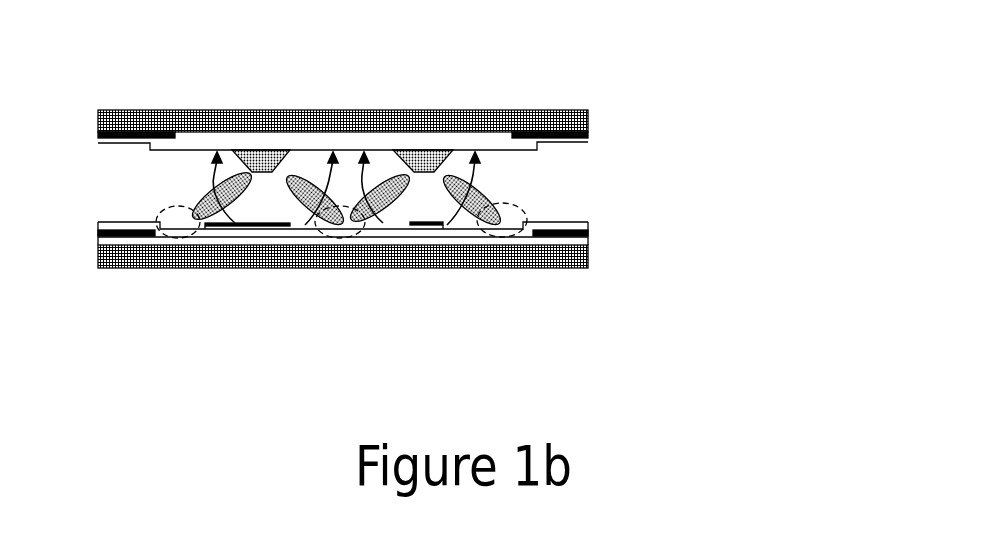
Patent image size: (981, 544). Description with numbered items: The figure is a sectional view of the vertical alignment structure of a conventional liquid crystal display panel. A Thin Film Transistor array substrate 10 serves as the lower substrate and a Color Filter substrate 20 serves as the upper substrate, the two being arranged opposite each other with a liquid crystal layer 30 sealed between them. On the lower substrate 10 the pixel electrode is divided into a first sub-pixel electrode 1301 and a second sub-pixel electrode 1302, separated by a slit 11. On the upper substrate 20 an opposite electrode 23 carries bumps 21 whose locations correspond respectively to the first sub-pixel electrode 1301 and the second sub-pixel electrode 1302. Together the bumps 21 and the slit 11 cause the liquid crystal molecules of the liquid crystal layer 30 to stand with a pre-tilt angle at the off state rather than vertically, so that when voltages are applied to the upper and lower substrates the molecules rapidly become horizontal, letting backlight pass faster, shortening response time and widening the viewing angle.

The Color Filter substrate 20 is at (580, 122).
The opposite electrode 23 is at (588, 138).
The bumps 21 is at (257, 152).
The liquid crystal layer 30 is at (485, 195).
The Thin Film Transistor array substrate 10 is at (582, 247).
The slit 11 is at (345, 225).
The first sub-pixel electrode 1301 is at (258, 230).
The second sub-pixel electrode 1302 is at (450, 225).